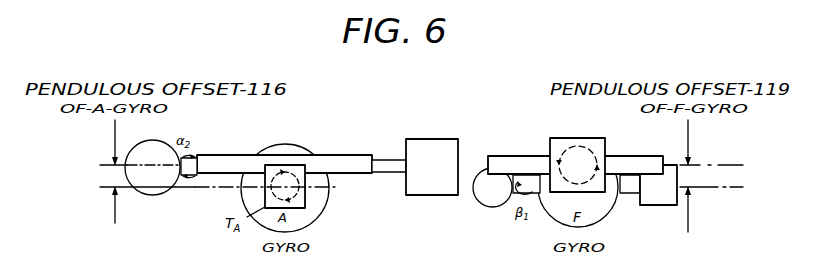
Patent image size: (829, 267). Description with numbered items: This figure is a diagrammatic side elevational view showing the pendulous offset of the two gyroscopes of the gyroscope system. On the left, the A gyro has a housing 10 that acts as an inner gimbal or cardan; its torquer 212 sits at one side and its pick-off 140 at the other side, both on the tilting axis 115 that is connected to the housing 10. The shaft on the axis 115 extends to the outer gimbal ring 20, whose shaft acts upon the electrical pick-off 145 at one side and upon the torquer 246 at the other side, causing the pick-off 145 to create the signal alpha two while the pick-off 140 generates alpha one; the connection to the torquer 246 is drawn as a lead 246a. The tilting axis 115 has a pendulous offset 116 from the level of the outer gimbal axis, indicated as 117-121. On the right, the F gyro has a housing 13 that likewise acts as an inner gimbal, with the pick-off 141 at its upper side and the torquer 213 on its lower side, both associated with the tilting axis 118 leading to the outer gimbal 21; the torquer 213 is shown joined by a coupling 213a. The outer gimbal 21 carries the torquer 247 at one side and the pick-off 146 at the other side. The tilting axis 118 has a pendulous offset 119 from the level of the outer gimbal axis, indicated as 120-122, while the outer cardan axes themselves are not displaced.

The housing 10 is at (317, 218).
The housing 13 is at (545, 212).
The outer gimbal ring 20 is at (219, 155).
The outer gimbal 21 is at (502, 156).
The tilting axis 115 is at (193, 189).
The pendulous offset 116 is at (103, 176).
The level of the axis 117-121 is at (107, 160).
The tilting axis 118 is at (723, 185).
The pendulous offset 119 is at (732, 177).
The level of the axis 120-122 is at (697, 162).
The pick-off 140 is at (306, 198).
The pick-off 141 is at (475, 200).
The electrical pick-off 145 is at (150, 195).
The pick-off 146 is at (596, 138).
The torquer 212 is at (272, 165).
The torquer 213 is at (674, 207).
The torquer coupling 213a is at (633, 193).
The torquer 246 is at (433, 139).
The amplifier lead 246a is at (383, 158).
The torquer 247 is at (556, 128).